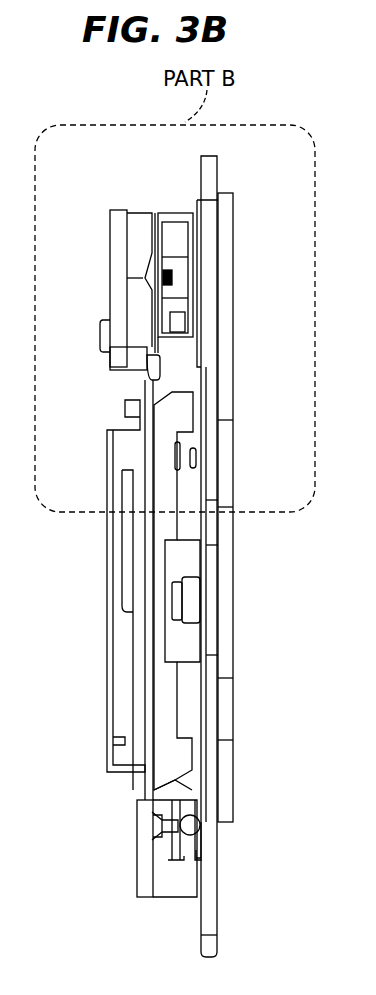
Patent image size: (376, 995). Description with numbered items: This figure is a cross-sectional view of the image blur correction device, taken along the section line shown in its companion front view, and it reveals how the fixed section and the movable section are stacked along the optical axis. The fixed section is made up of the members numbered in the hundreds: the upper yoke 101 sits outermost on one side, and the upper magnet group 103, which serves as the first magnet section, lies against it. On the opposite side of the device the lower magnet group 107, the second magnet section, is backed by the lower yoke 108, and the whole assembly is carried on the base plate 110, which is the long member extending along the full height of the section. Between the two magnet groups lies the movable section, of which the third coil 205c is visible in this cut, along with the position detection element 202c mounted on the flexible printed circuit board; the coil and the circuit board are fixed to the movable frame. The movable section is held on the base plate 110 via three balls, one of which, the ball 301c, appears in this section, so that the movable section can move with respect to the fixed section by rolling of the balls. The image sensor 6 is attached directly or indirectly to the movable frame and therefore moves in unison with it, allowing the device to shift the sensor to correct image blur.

The upper yoke 101 is at (128, 258).
The upper magnet group 103 is at (128, 310).
The third coil 205c is at (180, 232).
The position detection element 202c is at (174, 278).
The lower magnet group 107 is at (231, 300).
The lower yoke 108 is at (232, 363).
The image sensor 6 is at (122, 577).
The ball 301c is at (203, 830).
The base plate 110 is at (209, 912).